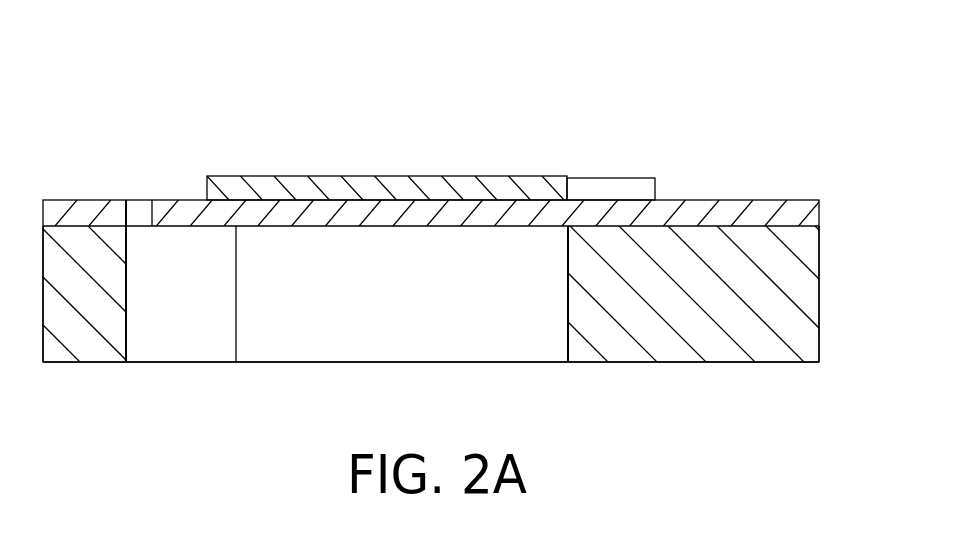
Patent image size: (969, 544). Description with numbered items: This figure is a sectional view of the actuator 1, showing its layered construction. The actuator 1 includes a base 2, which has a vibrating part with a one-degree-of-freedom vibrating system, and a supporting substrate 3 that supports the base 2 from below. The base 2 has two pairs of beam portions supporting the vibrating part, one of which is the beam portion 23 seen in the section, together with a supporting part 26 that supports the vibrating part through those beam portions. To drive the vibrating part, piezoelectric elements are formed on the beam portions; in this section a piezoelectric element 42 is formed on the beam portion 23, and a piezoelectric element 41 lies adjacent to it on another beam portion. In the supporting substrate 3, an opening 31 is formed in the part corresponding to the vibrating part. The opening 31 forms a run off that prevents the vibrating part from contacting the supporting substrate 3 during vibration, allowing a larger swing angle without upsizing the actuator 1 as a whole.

The actuator 1 is at (716, 110).
The base 2 is at (833, 202).
The supporting substrate 3 is at (835, 293).
The beam portion 23 is at (350, 213).
The supporting part 26 is at (767, 213).
The opening 31 is at (187, 302).
The piezoelectric element 41 is at (603, 190).
The piezoelectric element 42 is at (452, 183).